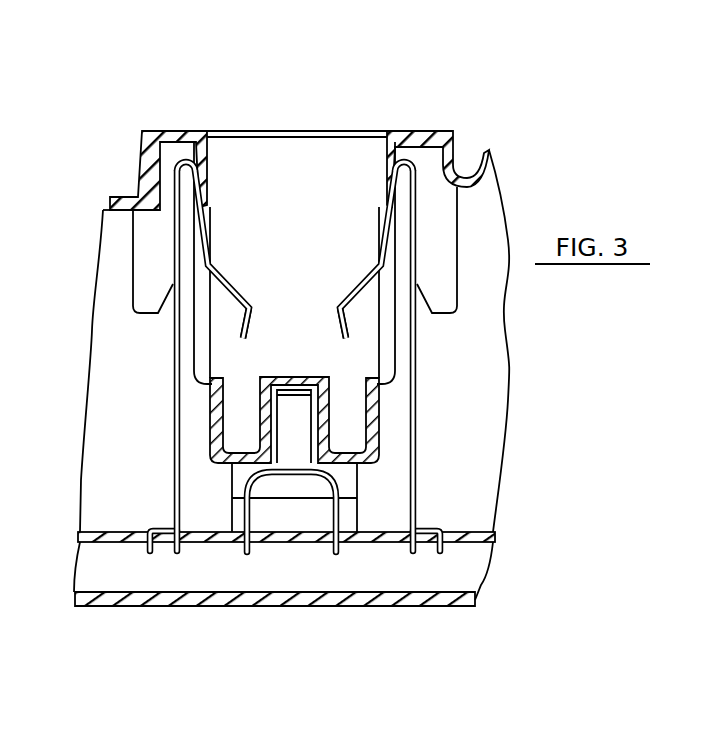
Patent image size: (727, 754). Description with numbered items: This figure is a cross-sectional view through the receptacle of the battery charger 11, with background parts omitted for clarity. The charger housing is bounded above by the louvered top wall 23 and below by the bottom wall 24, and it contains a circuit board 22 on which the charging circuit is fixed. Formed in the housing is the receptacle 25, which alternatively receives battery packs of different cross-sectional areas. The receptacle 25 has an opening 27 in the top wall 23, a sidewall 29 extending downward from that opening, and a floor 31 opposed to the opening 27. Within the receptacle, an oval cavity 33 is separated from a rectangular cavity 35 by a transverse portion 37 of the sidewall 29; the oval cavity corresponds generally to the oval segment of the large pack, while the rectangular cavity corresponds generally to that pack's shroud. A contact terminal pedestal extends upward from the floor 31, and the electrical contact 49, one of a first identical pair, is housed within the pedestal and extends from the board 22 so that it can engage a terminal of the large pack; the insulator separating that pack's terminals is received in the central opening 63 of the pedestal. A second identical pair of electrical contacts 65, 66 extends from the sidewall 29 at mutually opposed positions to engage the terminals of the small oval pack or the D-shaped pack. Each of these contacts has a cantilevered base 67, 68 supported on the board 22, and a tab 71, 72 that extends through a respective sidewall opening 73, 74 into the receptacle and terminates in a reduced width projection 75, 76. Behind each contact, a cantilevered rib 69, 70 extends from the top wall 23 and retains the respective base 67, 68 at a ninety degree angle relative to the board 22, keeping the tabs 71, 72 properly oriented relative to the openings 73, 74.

The charger 11 is at (373, 60).
The circuit board 22 is at (120, 537).
The top wall 23 is at (110, 197).
The bottom wall 24 is at (128, 600).
The receptacle 25 is at (308, 100).
The opening 27 is at (366, 130).
The sidewall 29 is at (318, 172).
The floor 31 is at (233, 463).
The oval cavity 33 is at (233, 138).
The rectangular cavity 35 is at (347, 427).
The transverse portion 37 is at (222, 377).
The electrical contact 49 is at (296, 455).
The central opening 63 is at (298, 376).
The electrical contact 65 is at (243, 258).
The electrical contact 66 is at (363, 248).
The cantilevered base 67 is at (173, 378).
The cantilevered base 68 is at (417, 397).
The cantilevered rib 69 is at (148, 245).
The cantilevered rib 70 is at (437, 253).
The tab 71 is at (207, 243).
The tab 72 is at (387, 226).
The sidewall opening 73 is at (390, 342).
The sidewall opening 74 is at (203, 330).
The reduced width projection 75 is at (253, 322).
The reduced width projection 76 is at (340, 318).